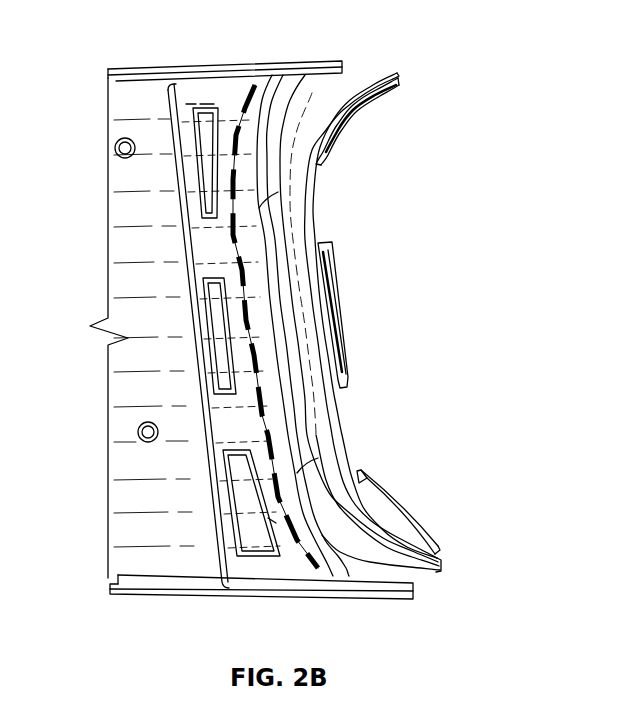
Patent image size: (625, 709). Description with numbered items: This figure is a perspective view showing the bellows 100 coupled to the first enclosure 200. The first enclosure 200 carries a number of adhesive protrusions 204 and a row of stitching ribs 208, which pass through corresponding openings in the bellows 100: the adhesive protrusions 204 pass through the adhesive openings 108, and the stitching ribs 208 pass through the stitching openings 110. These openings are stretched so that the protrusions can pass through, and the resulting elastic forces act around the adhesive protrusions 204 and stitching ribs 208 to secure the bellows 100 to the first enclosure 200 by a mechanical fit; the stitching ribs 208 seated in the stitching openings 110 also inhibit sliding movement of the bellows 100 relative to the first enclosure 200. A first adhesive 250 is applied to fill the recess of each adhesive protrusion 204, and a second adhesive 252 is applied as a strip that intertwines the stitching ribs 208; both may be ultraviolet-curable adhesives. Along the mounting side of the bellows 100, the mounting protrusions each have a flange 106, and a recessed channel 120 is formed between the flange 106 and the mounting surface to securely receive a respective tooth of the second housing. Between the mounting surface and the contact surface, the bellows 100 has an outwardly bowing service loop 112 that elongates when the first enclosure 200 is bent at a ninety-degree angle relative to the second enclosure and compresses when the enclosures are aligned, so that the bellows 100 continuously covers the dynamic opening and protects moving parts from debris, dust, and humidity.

The bellows 100 is at (392, 331).
The flange 106 is at (348, 110).
The adhesive opening 108 is at (190, 106).
The stitching opening 110 is at (297, 511).
The service loop 112 is at (330, 439).
The recessed channel 120 is at (330, 302).
The first enclosure 200 is at (133, 599).
The adhesive protrusion 204 is at (206, 104).
The stitching rib 208 is at (271, 522).
The first adhesive 250 is at (205, 148).
The second adhesive 252 is at (257, 84).